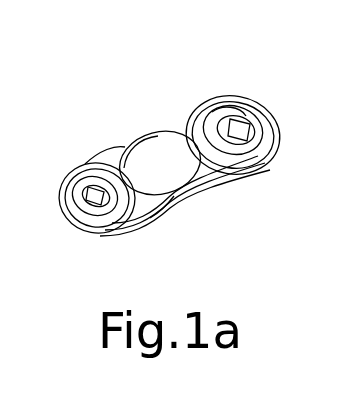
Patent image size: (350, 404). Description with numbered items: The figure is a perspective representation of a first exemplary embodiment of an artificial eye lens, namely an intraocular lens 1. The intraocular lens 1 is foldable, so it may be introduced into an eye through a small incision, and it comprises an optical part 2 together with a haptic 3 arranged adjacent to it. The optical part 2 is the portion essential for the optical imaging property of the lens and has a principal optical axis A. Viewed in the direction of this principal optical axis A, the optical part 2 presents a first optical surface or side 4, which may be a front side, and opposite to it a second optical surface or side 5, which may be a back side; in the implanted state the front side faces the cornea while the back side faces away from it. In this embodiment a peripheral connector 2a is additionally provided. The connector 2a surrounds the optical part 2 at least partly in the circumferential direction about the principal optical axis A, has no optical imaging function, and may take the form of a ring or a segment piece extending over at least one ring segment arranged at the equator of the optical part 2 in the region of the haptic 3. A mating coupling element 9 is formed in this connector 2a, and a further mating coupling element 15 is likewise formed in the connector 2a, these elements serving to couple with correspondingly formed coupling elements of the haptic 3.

The intraocular lens 1 is at (132, 131).
The optical part 2 is at (206, 151).
The peripheral connector 2a is at (185, 160).
The haptic 3 is at (72, 157).
The first optical surface 4 is at (213, 132).
The second optical surface 5 is at (166, 217).
The mating coupling element 9 is at (128, 200).
The further mating coupling element 15 is at (216, 110).
The principal optical axis A is at (182, 188).